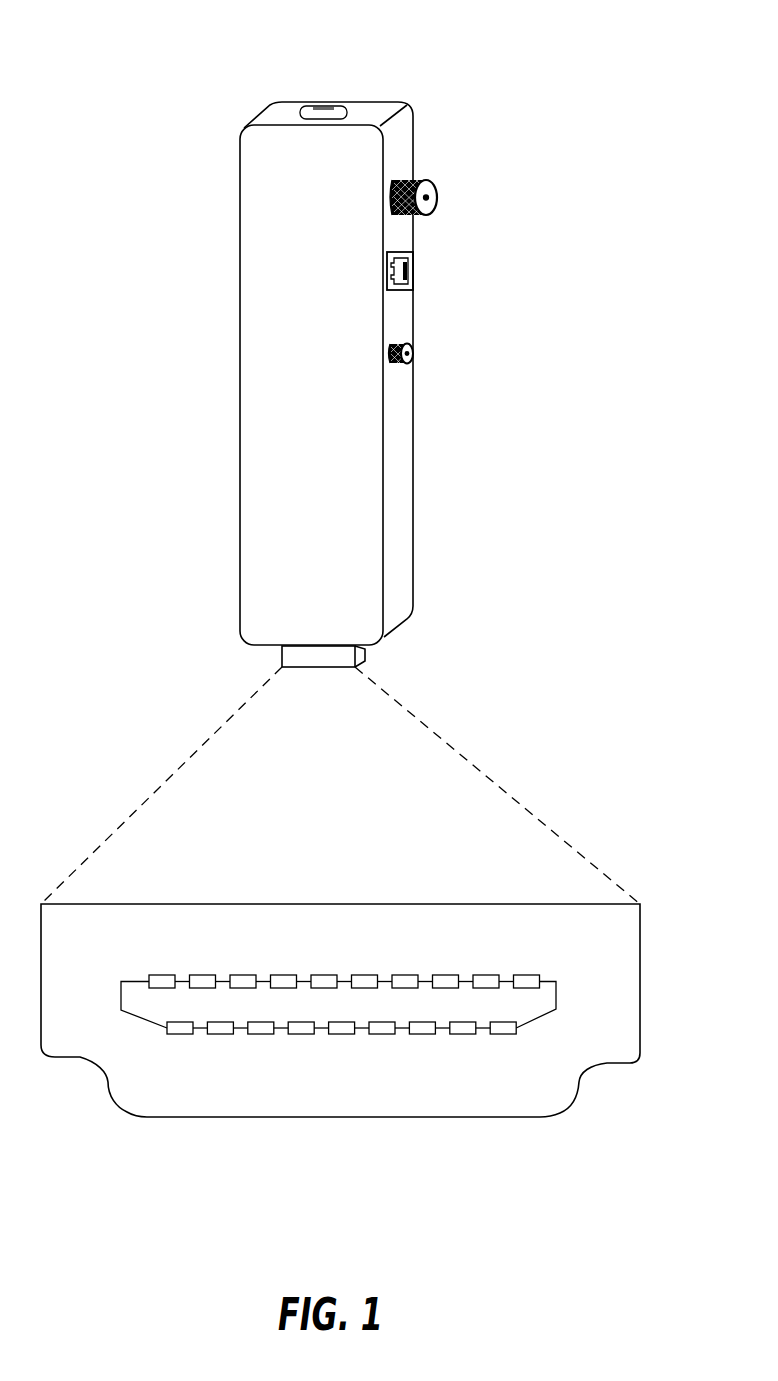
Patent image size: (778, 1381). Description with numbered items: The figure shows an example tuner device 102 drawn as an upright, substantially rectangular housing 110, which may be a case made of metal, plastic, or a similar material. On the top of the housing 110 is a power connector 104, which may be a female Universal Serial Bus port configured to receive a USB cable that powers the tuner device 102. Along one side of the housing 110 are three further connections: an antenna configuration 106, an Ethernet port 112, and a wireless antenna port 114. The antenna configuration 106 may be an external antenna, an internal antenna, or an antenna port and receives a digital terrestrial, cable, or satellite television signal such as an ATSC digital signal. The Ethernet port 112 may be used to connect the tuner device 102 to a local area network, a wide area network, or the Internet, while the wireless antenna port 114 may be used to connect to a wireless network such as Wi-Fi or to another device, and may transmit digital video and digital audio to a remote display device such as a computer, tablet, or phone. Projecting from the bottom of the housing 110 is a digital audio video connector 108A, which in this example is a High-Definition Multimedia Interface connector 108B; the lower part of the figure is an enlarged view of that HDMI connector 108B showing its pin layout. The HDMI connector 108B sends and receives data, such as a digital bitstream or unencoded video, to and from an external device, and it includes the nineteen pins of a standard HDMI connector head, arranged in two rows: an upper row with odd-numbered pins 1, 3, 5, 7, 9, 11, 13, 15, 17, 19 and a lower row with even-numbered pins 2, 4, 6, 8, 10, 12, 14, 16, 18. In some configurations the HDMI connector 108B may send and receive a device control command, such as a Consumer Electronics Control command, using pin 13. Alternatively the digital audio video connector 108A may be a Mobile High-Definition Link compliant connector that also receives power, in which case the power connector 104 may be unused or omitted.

The tuner device 102 is at (603, 31).
The power connector 104 is at (378, 102).
The antenna configuration 106 is at (418, 181).
The digital audio video connector 108A is at (288, 668).
The HDMI connector 108B is at (340, 994).
The housing 110 is at (240, 196).
The Ethernet port 112 is at (405, 252).
The wireless antenna port 114 is at (401, 344).
The pin 1 is at (527, 968).
The pin 2 is at (503, 1042).
The pin 3 is at (486, 968).
The pin 4 is at (463, 1042).
The pin 5 is at (446, 968).
The pin 6 is at (422, 1042).
The pin 7 is at (405, 968).
The pin 8 is at (382, 1042).
The pin 9 is at (365, 968).
The pin 10 is at (341, 1042).
The pin 11 is at (324, 968).
The pin 12 is at (301, 1042).
The pin 13 is at (283, 968).
The pin 14 is at (260, 1042).
The pin 15 is at (243, 968).
The pin 16 is at (220, 1042).
The pin 17 is at (202, 968).
The pin 18 is at (180, 1042).
The pin 19 is at (162, 968).